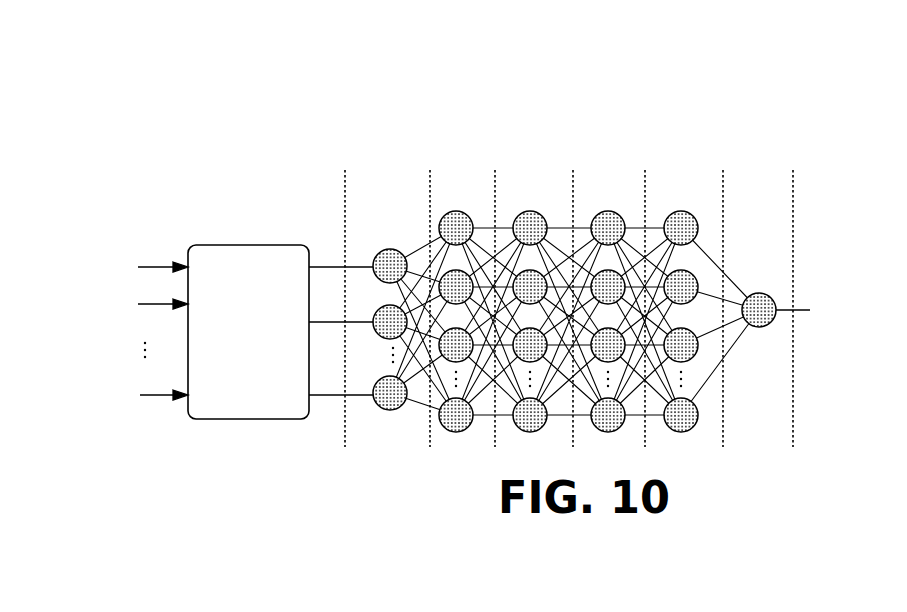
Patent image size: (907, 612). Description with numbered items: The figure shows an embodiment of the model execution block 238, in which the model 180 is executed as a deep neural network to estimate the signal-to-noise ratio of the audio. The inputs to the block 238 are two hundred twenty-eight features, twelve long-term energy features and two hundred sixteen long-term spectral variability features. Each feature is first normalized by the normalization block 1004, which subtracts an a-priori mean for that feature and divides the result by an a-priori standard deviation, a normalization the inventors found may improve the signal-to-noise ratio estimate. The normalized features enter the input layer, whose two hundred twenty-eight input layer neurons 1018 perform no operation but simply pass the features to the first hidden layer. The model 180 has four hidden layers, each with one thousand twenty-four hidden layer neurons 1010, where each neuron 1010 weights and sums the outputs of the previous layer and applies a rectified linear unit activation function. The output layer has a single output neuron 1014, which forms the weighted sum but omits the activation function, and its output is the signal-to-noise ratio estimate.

The model execution block 238 is at (723, 52).
The model 180 is at (793, 133).
The normalization block 1004 is at (180, 332).
The input layer neuron 1018 is at (387, 316).
The hidden layer neuron 1010 is at (464, 310).
The output layer neuron 1014 is at (763, 298).